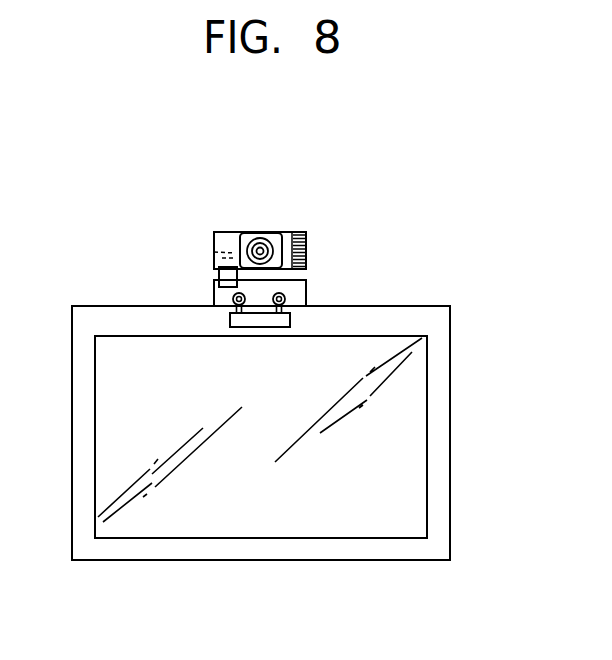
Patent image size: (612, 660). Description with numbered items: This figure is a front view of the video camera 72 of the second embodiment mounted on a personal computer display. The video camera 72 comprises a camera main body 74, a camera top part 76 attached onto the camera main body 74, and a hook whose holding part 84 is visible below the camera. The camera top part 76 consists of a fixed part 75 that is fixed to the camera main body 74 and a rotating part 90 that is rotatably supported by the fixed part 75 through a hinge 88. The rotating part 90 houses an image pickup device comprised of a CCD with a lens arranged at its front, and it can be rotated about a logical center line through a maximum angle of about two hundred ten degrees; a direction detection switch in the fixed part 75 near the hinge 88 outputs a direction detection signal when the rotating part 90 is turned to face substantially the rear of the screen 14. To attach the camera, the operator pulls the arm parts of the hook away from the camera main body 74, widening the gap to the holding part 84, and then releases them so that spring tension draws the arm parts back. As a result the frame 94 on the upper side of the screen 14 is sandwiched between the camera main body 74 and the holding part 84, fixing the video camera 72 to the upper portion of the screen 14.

The screen 14 is at (383, 439).
The video camera 72 is at (206, 203).
The camera main body 74 is at (307, 287).
The fixed part 75 is at (236, 232).
The camera top part 76 is at (270, 221).
The holding part 84 is at (230, 319).
The hinge 88 is at (214, 252).
The rotating part 90 is at (290, 232).
The frame 94 is at (436, 305).